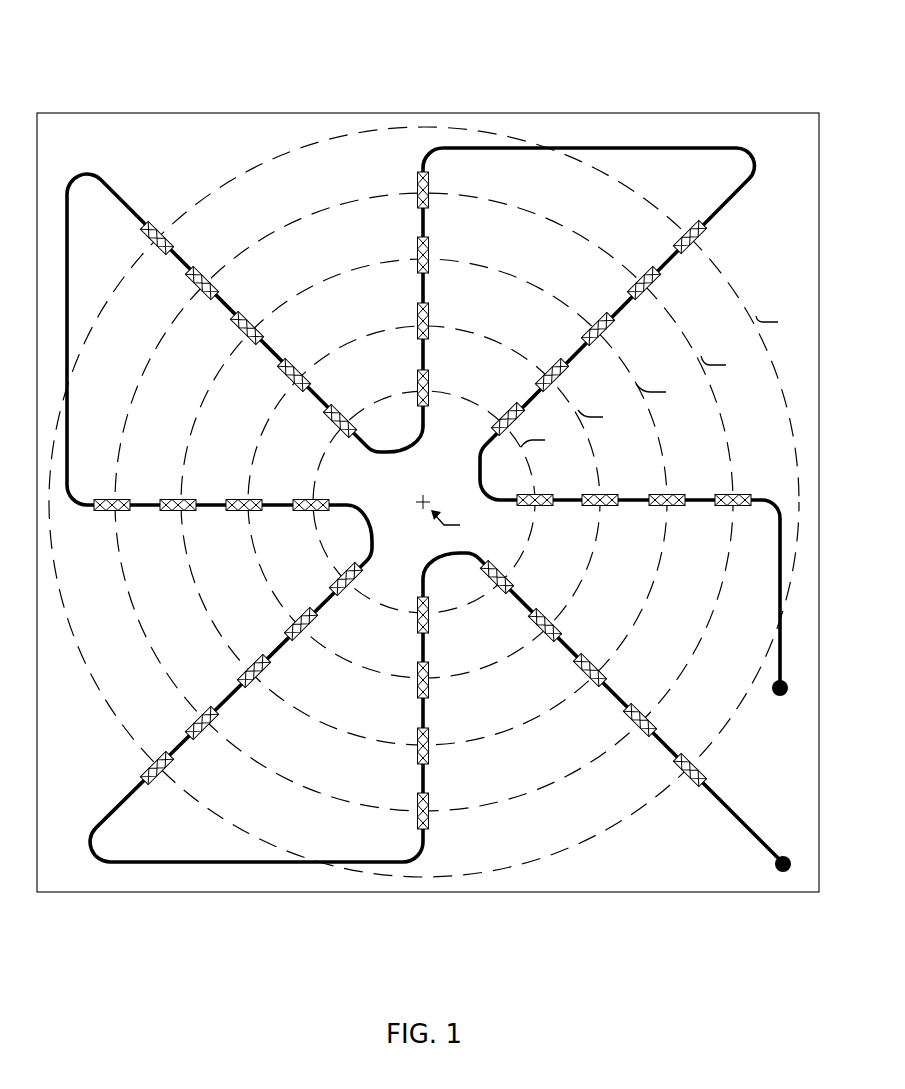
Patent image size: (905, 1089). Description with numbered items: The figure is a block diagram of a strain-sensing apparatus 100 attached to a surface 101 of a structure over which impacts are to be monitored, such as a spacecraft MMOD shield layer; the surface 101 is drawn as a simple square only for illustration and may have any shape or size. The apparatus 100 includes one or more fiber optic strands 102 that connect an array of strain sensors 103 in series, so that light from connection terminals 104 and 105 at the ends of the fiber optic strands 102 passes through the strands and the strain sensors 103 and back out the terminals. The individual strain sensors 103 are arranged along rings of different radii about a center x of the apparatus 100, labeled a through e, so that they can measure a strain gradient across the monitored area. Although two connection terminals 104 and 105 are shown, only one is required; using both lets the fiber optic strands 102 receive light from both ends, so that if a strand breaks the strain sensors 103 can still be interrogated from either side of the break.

The strain-sensing apparatus 100 is at (207, 121).
The surface 101 is at (165, 113).
The fiber optic strands 102 is at (717, 794).
The strain sensors 103 is at (431, 186).
The connection terminal 104 is at (775, 868).
The connection terminal 105 is at (782, 698).